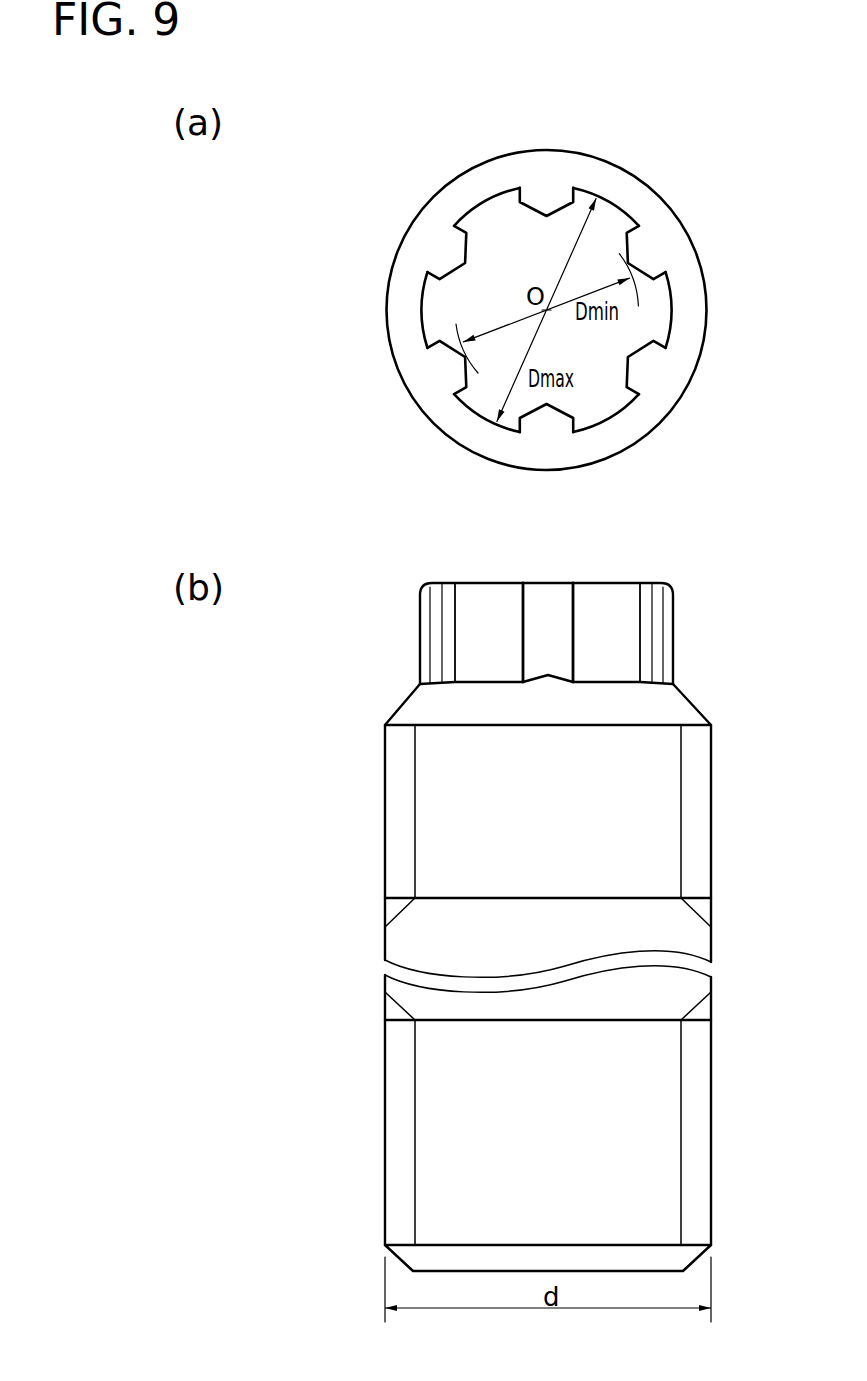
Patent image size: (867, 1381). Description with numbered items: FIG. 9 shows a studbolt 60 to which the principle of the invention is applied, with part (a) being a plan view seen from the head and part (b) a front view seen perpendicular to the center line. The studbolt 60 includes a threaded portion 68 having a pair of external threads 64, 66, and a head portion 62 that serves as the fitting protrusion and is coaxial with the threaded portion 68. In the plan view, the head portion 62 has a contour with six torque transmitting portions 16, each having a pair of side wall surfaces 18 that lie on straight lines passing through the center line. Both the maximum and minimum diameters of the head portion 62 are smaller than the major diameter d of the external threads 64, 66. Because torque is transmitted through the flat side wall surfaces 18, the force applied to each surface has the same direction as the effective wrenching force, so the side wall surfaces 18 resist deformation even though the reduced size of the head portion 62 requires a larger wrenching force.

The studbolt 60 is at (674, 183).
The head portion 62 is at (557, 419).
The torque transmitting portions 16 is at (663, 305).
The side wall surfaces 18 is at (637, 236).
The external thread 64 is at (700, 803).
The external thread 66 is at (707, 1103).
The threaded portion 68 is at (532, 1118).